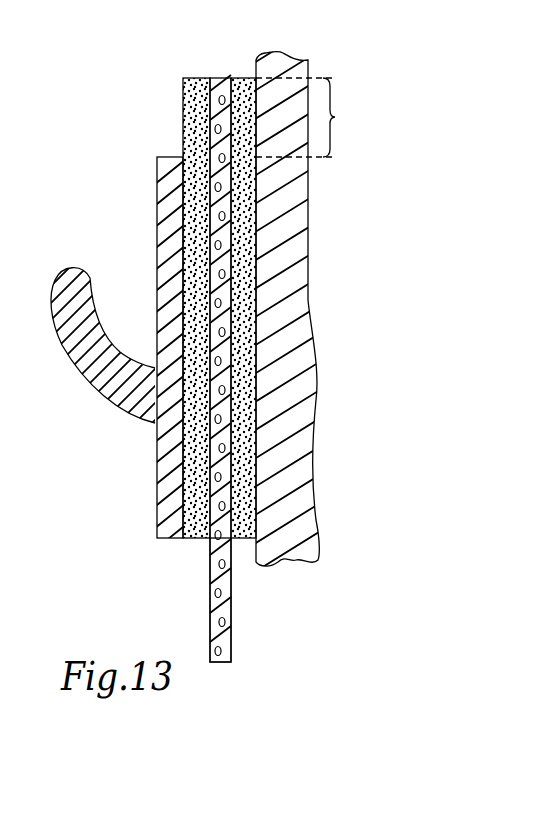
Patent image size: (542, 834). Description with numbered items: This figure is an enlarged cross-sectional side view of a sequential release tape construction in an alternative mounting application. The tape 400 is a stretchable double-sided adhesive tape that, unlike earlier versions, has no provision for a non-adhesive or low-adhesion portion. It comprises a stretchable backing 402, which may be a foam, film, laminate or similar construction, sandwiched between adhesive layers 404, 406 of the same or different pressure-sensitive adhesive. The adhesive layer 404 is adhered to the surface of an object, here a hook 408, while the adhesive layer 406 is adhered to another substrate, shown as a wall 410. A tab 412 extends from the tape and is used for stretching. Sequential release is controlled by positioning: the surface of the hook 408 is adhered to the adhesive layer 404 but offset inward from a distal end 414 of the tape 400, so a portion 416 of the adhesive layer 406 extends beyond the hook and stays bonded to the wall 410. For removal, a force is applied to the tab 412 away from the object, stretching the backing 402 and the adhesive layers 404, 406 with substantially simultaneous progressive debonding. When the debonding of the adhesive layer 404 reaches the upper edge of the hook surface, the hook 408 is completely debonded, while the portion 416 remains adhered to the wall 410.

The tape 400 is at (193, 599).
The stretchable backing 402 is at (218, 78).
The adhesive layer 404 is at (195, 540).
The adhesive layer 406 is at (240, 78).
The hook 408 is at (73, 362).
The wall 410 is at (310, 352).
The tab 412 is at (233, 633).
The distal end 414 is at (200, 78).
The portion 416 is at (321, 117).